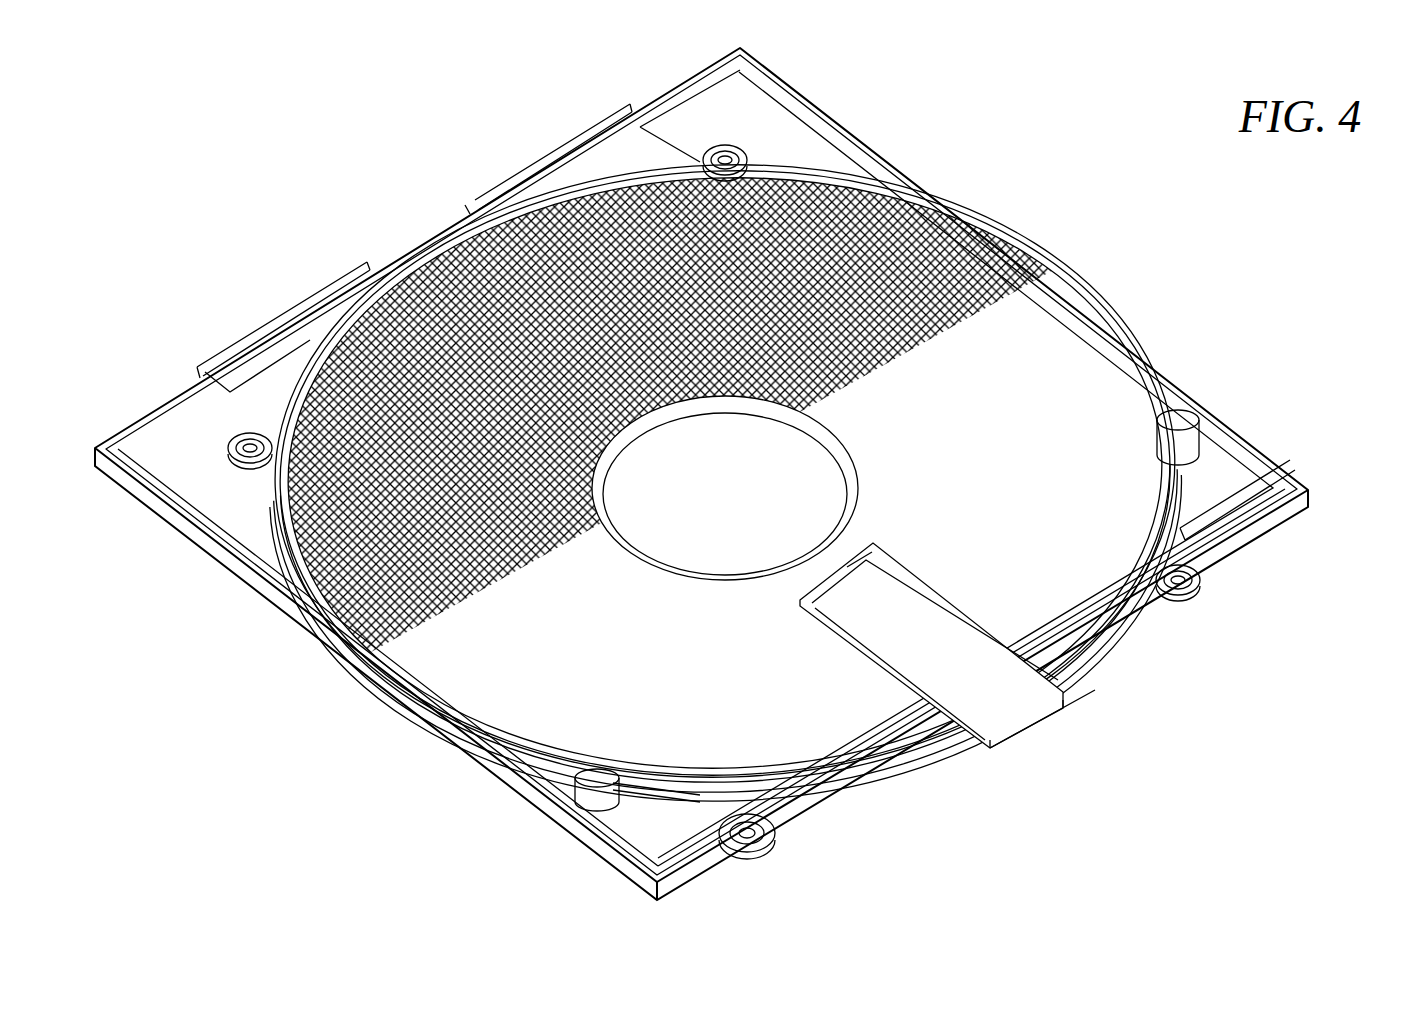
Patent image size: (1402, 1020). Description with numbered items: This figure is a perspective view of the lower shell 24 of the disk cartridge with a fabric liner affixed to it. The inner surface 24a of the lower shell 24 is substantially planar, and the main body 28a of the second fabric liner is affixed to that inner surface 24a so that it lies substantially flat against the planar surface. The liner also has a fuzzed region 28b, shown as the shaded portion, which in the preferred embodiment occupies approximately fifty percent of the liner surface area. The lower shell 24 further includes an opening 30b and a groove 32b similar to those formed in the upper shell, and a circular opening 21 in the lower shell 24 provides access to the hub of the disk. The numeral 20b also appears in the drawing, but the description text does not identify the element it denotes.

The lower shell half 20b is at (1165, 640).
The circular opening 21 is at (683, 518).
The lower shell 24 is at (857, 128).
The inner surface 24a is at (377, 653).
The main body 28a is at (1030, 370).
The fuzzed region 28b is at (917, 297).
The opening 30b is at (1003, 703).
The groove 32b is at (925, 655).